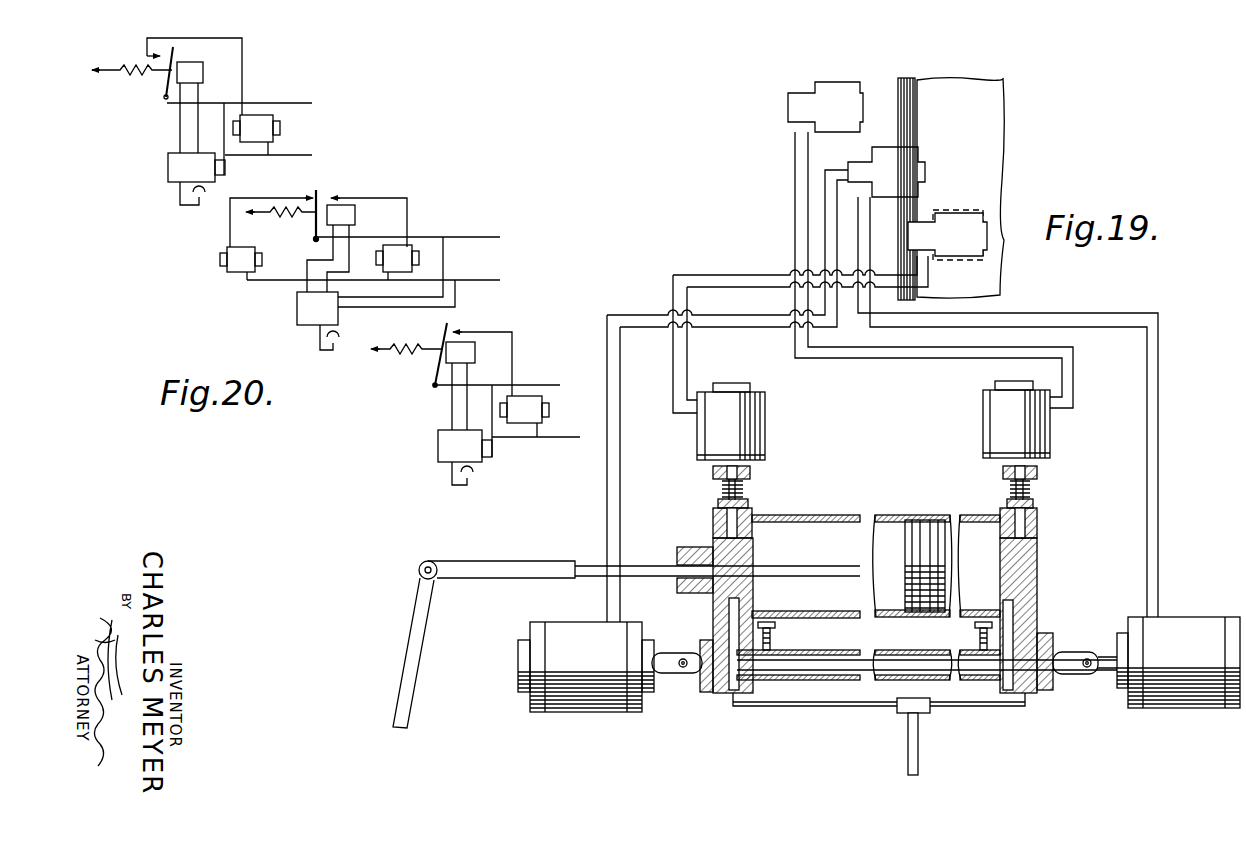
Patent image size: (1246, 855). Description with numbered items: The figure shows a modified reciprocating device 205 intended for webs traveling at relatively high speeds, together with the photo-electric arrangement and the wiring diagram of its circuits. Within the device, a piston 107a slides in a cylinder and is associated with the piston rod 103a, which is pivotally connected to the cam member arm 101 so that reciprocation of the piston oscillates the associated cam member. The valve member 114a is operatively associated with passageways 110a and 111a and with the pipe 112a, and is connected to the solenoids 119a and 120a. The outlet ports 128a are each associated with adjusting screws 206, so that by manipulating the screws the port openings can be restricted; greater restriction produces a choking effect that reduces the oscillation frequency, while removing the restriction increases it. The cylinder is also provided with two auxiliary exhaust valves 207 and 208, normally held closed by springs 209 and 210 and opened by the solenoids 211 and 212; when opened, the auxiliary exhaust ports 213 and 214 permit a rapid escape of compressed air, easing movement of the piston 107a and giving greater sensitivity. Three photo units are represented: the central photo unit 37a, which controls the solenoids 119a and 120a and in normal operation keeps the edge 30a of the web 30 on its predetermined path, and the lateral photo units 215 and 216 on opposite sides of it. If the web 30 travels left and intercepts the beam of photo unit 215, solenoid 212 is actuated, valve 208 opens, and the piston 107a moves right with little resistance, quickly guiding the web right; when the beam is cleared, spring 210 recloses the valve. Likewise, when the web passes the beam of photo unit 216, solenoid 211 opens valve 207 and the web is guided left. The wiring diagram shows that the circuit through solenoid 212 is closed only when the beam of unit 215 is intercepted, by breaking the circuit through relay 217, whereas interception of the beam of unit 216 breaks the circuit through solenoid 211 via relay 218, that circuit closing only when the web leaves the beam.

In FIG. 19, the cam member arm 101 is at (405, 628).
In FIG. 19, the piston rod 103a is at (815, 549).
In FIG. 19, the piston 107a is at (915, 528).
In FIG. 19, the passageway 110a is at (1002, 605).
In FIG. 19, the passageway 111a is at (757, 606).
In FIG. 19, the pipe 112a is at (880, 708).
In FIG. 19, the valve member 114a is at (699, 683).
In FIG. 20, the solenoid 119a is at (410, 258).
In FIG. 19, the solenoid 119a is at (1203, 695).
In FIG. 20, the solenoid 120a is at (236, 264).
In FIG. 19, the solenoid 120a is at (615, 700).
In FIG. 19, the outlet ports 128a is at (773, 652).
In FIG. 19, the reciprocating device 205 is at (711, 618).
In FIG. 19, the adjusting screws 206 is at (775, 630).
In FIG. 19, the auxiliary exhaust valve 207 is at (748, 505).
In FIG. 19, the auxiliary exhaust valve 208 is at (1035, 512).
In FIG. 19, the spring 209 is at (746, 483).
In FIG. 19, the spring 210 is at (1040, 489).
In FIG. 20, the solenoid 211 is at (532, 406).
In FIG. 19, the solenoid 211 is at (763, 443).
In FIG. 20, the solenoid 212 is at (268, 128).
In FIG. 19, the solenoid 212 is at (1050, 443).
In FIG. 19, the auxiliary exhaust port 213 is at (712, 535).
In FIG. 19, the auxiliary exhaust port 214 is at (1037, 531).
In FIG. 20, the photo unit 215 is at (176, 170).
In FIG. 19, the photo unit 215 is at (798, 101).
In FIG. 20, the photo unit 216 is at (446, 447).
In FIG. 19, the photo unit 216 is at (982, 232).
In FIG. 20, the relay 217 is at (198, 72).
In FIG. 20, the relay 218 is at (467, 350).
In FIG. 19, the web 30 is at (990, 290).
In FIG. 19, the edge of the web 30a is at (897, 210).
In FIG. 20, the central photo unit 37a is at (332, 350).
In FIG. 19, the central photo unit 37a is at (857, 169).